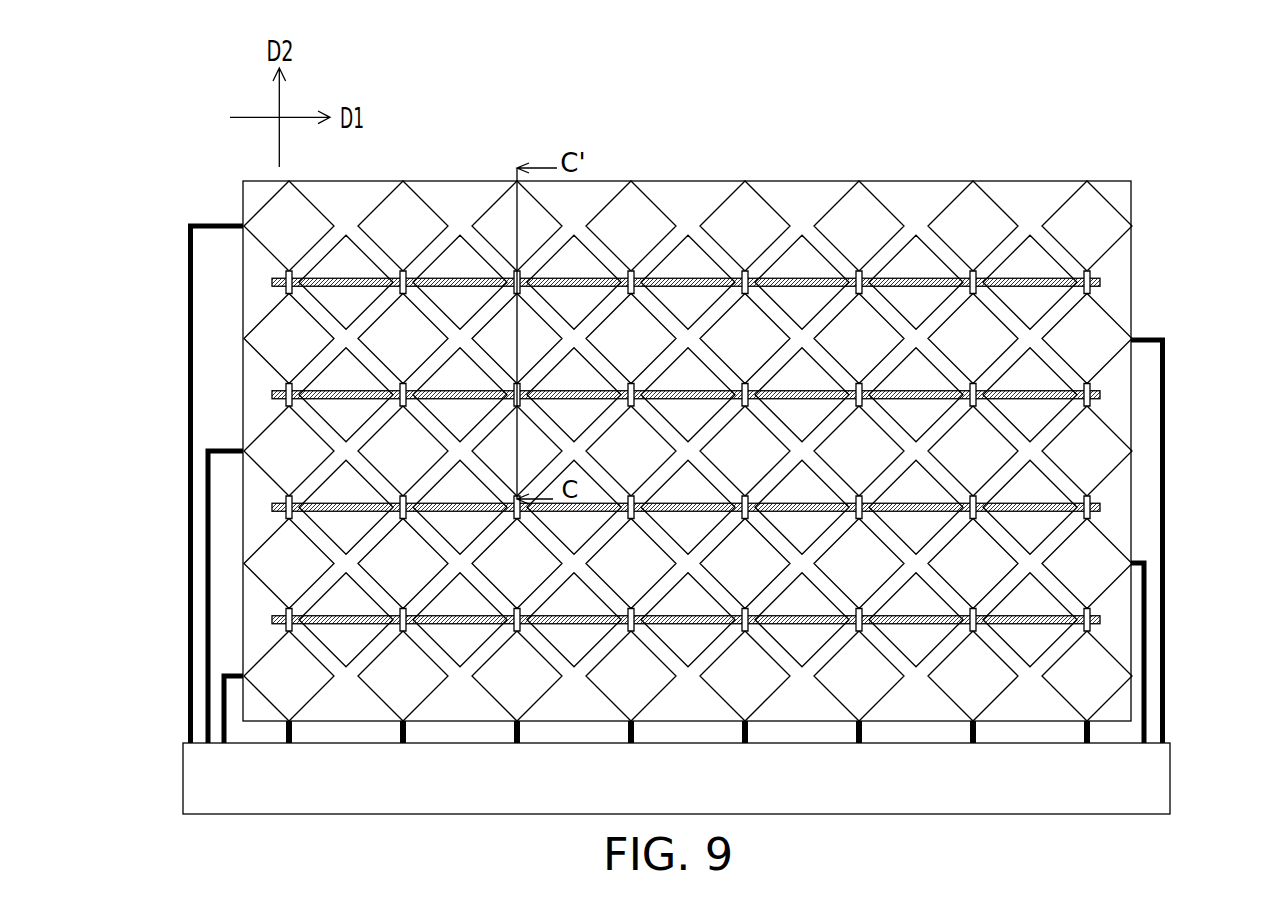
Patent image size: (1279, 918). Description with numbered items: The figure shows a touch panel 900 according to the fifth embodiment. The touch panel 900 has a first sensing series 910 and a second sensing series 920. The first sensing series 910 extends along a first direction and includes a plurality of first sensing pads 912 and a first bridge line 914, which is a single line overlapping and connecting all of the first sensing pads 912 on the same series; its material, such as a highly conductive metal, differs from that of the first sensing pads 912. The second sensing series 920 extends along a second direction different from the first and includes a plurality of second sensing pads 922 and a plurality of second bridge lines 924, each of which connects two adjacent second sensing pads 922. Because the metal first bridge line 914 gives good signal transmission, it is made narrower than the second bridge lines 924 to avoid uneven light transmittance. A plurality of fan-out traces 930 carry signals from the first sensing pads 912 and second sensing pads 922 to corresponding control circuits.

The touch panel 900 is at (1265, 816).
The first sensing series 910 is at (383, 108).
The first sensing pads 912 is at (462, 257).
The first bridge line 914 is at (373, 282).
The second sensing series 920 is at (740, 113).
The second sensing pads 922 is at (645, 216).
The second bridge lines 924 is at (637, 288).
The fan-out traces 930 is at (188, 372).